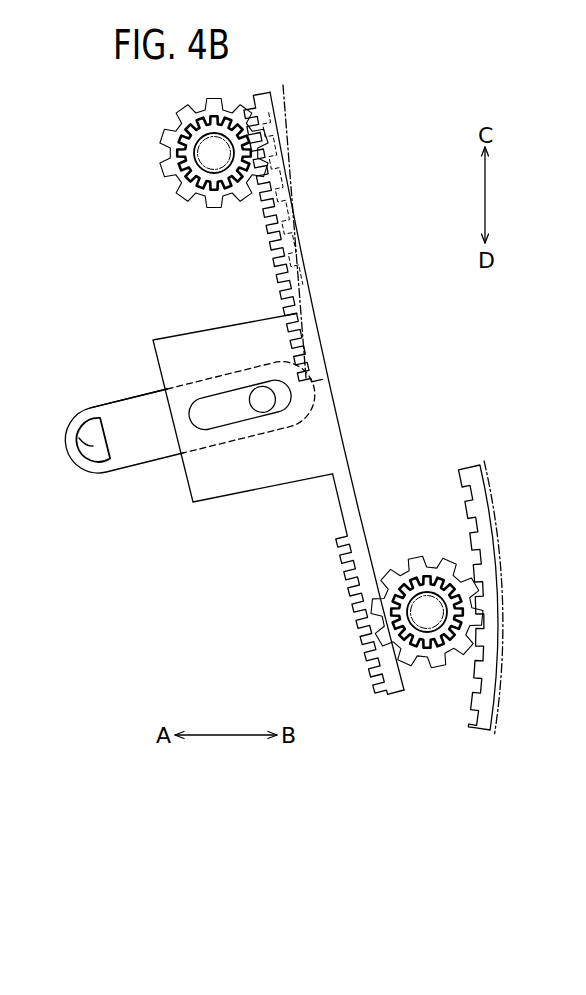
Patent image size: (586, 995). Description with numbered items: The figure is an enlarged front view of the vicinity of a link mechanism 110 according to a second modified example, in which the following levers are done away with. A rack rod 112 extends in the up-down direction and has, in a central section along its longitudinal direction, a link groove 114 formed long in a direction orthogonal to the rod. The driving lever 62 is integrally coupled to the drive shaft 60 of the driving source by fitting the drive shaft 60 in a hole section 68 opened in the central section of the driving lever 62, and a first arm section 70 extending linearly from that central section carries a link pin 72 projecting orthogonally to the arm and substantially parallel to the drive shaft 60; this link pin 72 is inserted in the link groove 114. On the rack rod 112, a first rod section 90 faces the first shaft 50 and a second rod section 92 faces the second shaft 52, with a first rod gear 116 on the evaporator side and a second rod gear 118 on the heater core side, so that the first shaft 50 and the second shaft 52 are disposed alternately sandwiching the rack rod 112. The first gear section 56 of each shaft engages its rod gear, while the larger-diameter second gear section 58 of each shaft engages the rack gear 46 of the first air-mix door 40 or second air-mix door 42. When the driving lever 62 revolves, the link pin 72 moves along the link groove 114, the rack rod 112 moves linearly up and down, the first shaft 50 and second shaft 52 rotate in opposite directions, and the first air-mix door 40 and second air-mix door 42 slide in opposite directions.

The first air-mix door 40 is at (279, 95).
The second air-mix door 42 is at (497, 514).
The rack gear 46 is at (466, 494).
The first shaft 50 is at (188, 207).
The second shaft 52 is at (430, 683).
The first gear section 56 is at (176, 171).
The second gear section 58 is at (178, 157).
The drive shaft 60 is at (92, 432).
The driving lever 62 is at (118, 395).
The hole section 68 is at (73, 462).
The first arm section 70 is at (135, 447).
The link pin 72 is at (258, 387).
The first rod section 90 is at (287, 200).
The second rod section 92 is at (350, 518).
The link mechanism 110 is at (200, 510).
The rack rod 112 is at (340, 368).
The link groove 114 is at (220, 412).
The first rod gear 116 is at (268, 210).
The second rod gear 118 is at (382, 557).